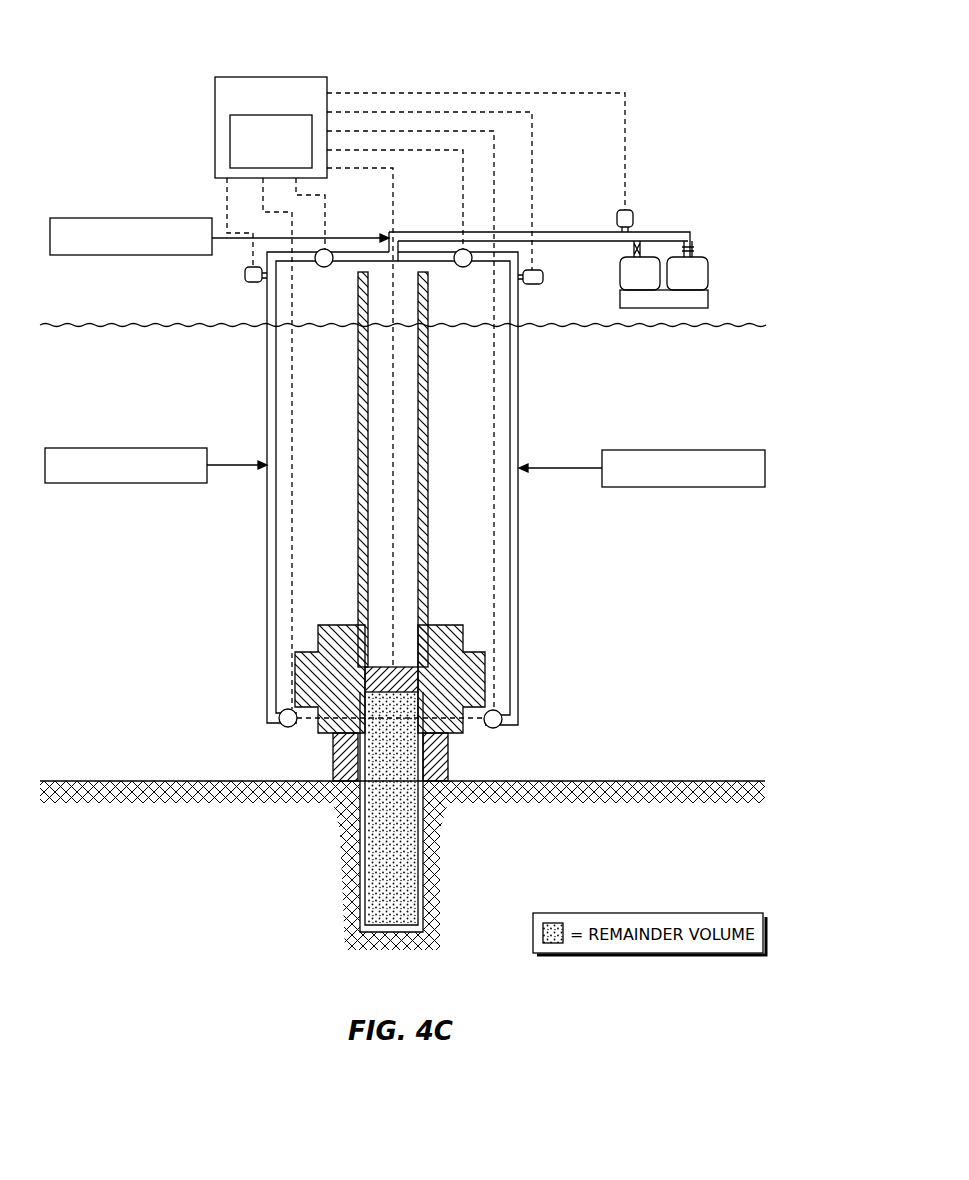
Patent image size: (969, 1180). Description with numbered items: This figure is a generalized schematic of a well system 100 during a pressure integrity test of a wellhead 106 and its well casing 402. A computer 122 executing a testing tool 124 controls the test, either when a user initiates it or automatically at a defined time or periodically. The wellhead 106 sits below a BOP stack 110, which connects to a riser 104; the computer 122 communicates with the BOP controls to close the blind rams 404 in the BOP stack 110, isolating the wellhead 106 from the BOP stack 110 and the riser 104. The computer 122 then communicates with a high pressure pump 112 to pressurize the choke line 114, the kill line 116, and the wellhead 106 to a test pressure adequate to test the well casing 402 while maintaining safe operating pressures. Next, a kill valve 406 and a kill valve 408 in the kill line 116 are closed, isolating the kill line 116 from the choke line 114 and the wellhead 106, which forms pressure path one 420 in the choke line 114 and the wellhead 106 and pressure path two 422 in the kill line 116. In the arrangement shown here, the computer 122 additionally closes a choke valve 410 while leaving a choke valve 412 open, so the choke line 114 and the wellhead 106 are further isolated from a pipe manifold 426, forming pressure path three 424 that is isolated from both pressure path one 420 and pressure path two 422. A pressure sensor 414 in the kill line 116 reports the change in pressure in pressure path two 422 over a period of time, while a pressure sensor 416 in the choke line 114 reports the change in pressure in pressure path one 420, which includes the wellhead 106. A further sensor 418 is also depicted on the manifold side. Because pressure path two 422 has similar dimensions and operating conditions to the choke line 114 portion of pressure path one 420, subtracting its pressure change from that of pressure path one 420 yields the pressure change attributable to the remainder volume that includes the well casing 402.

The well system 100 is at (675, 46).
The riser 104 is at (428, 458).
The wellhead 106 is at (448, 750).
The BOP stack 110 is at (452, 625).
The high pressure pump 112 is at (708, 275).
The choke line 114 is at (520, 430).
The kill line 116 is at (267, 430).
The computer 122 is at (228, 77).
The testing tool 124 is at (230, 140).
The well casing 402 is at (427, 828).
The blind rams 404 is at (401, 702).
The kill valve 406 is at (286, 728).
The kill valve 408 is at (322, 268).
The choke valve 410 is at (461, 268).
The choke valve 412 is at (496, 729).
The pressure sensor 414 is at (251, 283).
The pressure sensor 416 is at (540, 284).
The pressure sensor 418 is at (633, 215).
The pressure path 1 420 is at (685, 450).
The pressure path 2 422 is at (127, 447).
The pressure path 3 424 is at (133, 218).
The pipe manifold 426 is at (583, 232).